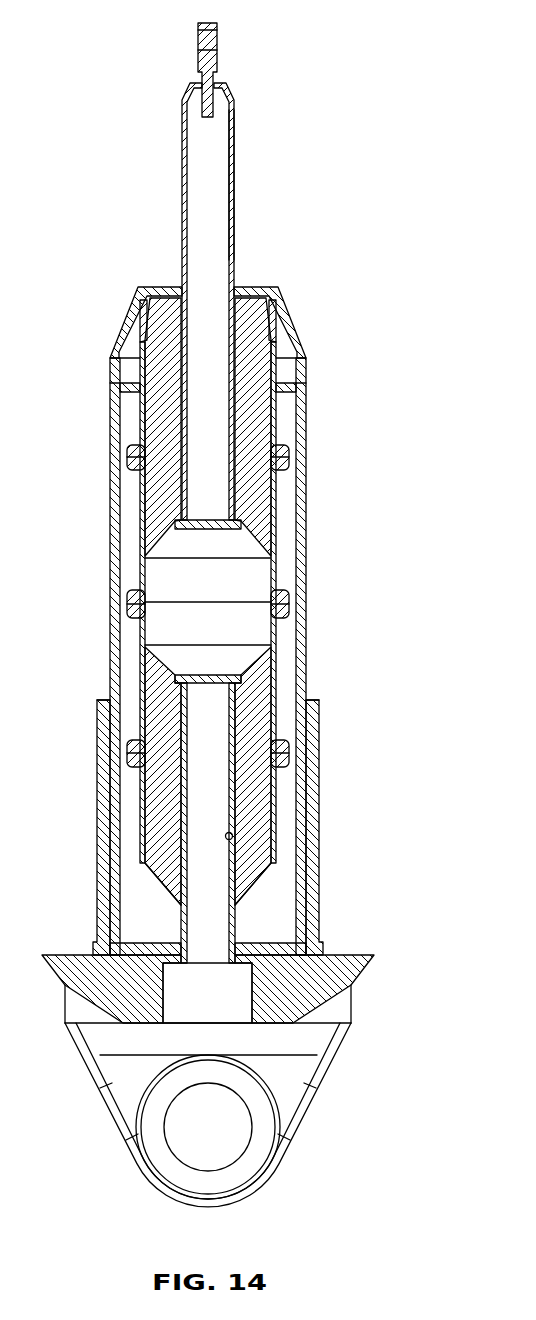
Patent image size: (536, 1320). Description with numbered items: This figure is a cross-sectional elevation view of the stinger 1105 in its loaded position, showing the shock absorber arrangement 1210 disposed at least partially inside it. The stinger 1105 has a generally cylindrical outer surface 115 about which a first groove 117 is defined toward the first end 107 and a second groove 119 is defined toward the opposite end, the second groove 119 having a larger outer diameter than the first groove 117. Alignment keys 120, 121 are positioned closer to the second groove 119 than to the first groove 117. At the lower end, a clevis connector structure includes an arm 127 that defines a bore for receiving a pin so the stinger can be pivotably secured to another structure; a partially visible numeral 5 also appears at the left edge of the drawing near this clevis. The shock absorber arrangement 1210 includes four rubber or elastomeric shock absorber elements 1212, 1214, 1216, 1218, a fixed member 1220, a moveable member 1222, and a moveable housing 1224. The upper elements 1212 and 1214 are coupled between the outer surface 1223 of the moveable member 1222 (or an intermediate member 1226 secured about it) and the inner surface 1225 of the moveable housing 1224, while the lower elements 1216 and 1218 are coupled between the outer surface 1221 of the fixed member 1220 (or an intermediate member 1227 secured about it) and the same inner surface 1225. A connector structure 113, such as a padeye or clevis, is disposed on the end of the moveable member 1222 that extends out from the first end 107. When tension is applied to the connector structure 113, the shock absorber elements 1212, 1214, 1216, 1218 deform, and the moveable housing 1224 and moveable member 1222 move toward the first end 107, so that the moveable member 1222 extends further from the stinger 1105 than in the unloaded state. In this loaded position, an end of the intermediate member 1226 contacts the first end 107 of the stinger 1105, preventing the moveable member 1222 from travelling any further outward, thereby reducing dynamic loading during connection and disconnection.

The stinger 1105 is at (145, 58).
The connector structure 113 is at (218, 40).
The moveable member 1222 is at (245, 127).
The outer surface 1223 is at (238, 190).
The shock absorber arrangement 1210 is at (242, 205).
The first end 107 is at (162, 290).
The intermediate member 1226 is at (255, 292).
The moveable housing 1224 is at (130, 330).
The first groove 117 is at (110, 385).
The shock absorber element 1212 is at (160, 410).
The shock absorber element 1214 is at (160, 490).
The outer surface 115 is at (112, 578).
The inner surface 1225 is at (268, 580).
The alignment key 120 is at (158, 718).
The alignment key 121 is at (315, 752).
The shock absorber element 1216 is at (165, 748).
The shock absorber element 1218 is at (170, 835).
The fixed member 1220 is at (233, 838).
The intermediate member 1227 is at (175, 905).
The outer surface 1221 is at (240, 935).
The second groove 119 is at (90, 933).
The clevis 5 is at (175, 1096).
The arm 127 is at (320, 1095).